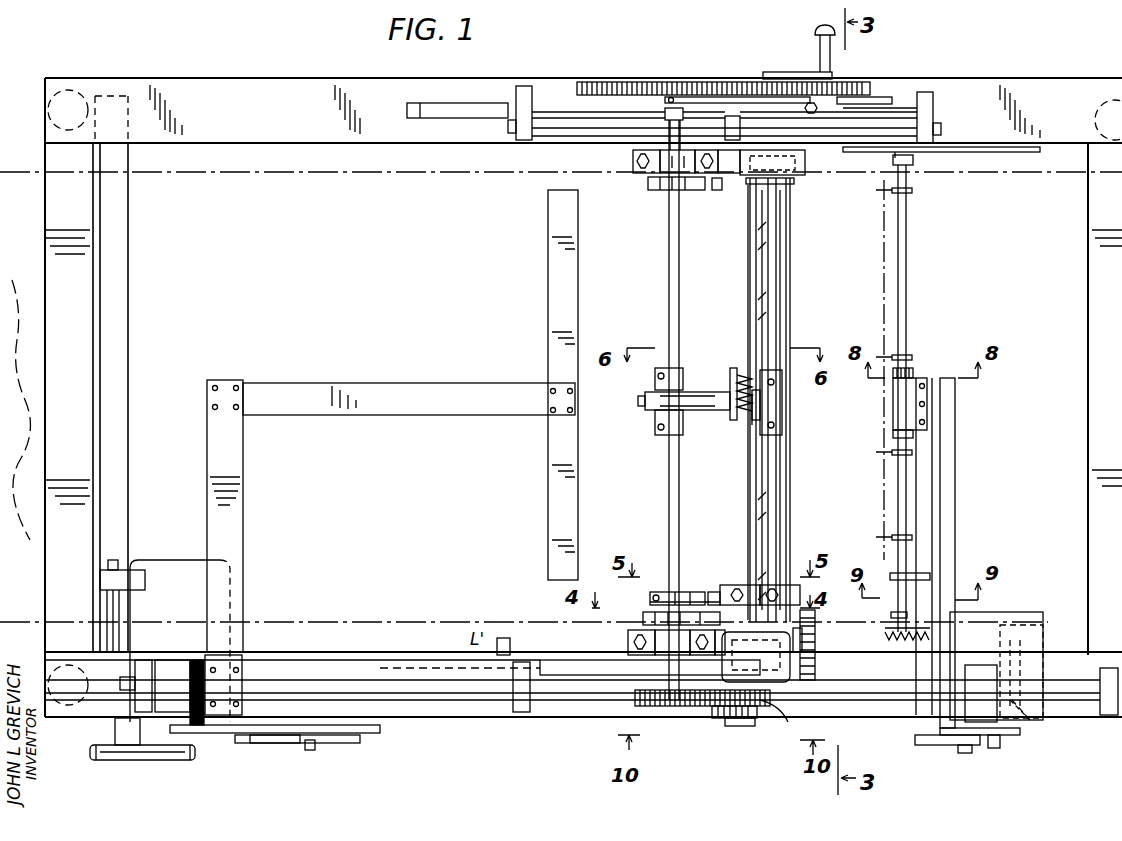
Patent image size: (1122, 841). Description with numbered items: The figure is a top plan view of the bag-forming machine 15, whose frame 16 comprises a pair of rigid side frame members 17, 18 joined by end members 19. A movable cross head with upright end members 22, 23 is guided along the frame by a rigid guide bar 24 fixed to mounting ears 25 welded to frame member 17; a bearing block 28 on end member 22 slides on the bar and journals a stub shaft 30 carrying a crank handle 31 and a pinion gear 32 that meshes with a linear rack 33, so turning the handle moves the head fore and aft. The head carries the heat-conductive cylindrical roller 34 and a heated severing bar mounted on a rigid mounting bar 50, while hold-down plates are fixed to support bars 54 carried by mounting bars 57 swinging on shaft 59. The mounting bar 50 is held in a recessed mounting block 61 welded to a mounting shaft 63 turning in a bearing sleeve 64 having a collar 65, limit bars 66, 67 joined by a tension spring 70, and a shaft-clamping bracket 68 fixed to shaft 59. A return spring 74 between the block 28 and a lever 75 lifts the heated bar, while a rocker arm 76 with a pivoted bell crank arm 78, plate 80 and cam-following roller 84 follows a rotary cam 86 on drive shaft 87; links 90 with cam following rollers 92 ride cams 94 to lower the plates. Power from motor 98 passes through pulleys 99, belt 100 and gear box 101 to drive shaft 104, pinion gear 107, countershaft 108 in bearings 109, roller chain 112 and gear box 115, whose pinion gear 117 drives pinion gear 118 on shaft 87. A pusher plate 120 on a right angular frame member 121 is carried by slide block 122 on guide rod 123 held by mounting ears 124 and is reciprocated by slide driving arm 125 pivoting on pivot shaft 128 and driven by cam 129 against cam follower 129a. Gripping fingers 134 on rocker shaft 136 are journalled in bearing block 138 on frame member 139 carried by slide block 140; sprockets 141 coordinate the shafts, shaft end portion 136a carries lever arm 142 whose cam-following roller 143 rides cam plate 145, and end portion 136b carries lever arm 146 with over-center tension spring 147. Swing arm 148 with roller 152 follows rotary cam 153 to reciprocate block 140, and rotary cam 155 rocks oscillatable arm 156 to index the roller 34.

The bag-forming machine 15 is at (892, 60).
The frame 16 is at (1042, 75).
The side frame member 17 is at (300, 89).
The side frame member 18 is at (560, 717).
The end members 19 is at (60, 340).
The upright end member 22 is at (805, 160).
The upright end member 23 is at (812, 643).
The guide bar 24 is at (600, 140).
The mounting ears 25 is at (524, 96).
The bearing block 28 is at (731, 124).
The stub shaft 30 is at (760, 82).
The crank handle 31 is at (820, 42).
The pinion gear 32 is at (786, 66).
The linear rack 33 is at (640, 82).
The cylindrical roller 34 is at (790, 322).
The mounting bar 50 is at (770, 470).
The support bars 54 is at (750, 288).
The mounting bars 57 is at (755, 218).
The shaft 59 is at (668, 449).
The mounting block 61 is at (782, 415).
The mounting shaft 63 is at (760, 396).
The bearing sleeve 64 is at (706, 410).
The collar 65 is at (642, 402).
The limit bar 66 is at (730, 381).
The limit bar 67 is at (752, 430).
The shaft-clamping bracket 68 is at (655, 384).
The tension spring 70 is at (745, 374).
The return spring 74 is at (817, 108).
The lever 75 is at (886, 100).
The rocker arm 76 is at (660, 596).
The bell crank arm 78 is at (722, 585).
The plate 80 is at (778, 597).
The cam-following roller 84 is at (724, 593).
The rotary cam 86 is at (650, 603).
The drive shaft 87 is at (668, 283).
The cam roller-mounting links 90 is at (730, 190).
The cam following rollers 92 is at (701, 190).
The cams 94 is at (648, 185).
The motor 98 is at (160, 622).
The pulleys 99 is at (116, 760).
The belt 100 is at (160, 760).
The gear box 101 is at (115, 738).
The drive shaft 104 is at (456, 664).
The pinion gear 107 is at (1022, 720).
The countershaft 108 is at (582, 652).
The bearings 109 is at (1030, 632).
The roller chain 112 is at (812, 640).
The gear box 115 is at (780, 678).
The pinion gear 117 is at (712, 718).
The pinion gear 118 is at (635, 701).
The pusher plate 120 is at (555, 300).
The right angular frame member 121 is at (305, 420).
The slide block 122 is at (170, 665).
The guide rod 123 is at (416, 692).
The mounting ears 124 is at (512, 712).
The slide driving arm 125 is at (332, 735).
The pivot shaft 128 is at (352, 742).
The cam 129 is at (250, 745).
The cam follower 129a is at (320, 750).
The film-gripping fingers 134 is at (880, 193).
The rocker shaft 136 is at (908, 234).
The end portion of shaft 136 136a is at (910, 165).
The end portion of shaft 136 136b is at (891, 617).
The bearing block 138 is at (893, 404).
The frame member 139 is at (940, 490).
The slide block 140 is at (986, 665).
The sprockets 141 is at (911, 379).
The lever arm 142 is at (885, 160).
The cam-following roller 143 is at (868, 104).
The cam plate 145 is at (995, 152).
The lever arm 146 is at (885, 632).
The tension spring 147 is at (915, 633).
The swing arm 148 is at (940, 732).
The cam-following roller 152 is at (1000, 746).
The rotary cam 153 is at (940, 745).
The rotary cam 155 is at (730, 726).
The oscillatable arm 156 is at (782, 722).